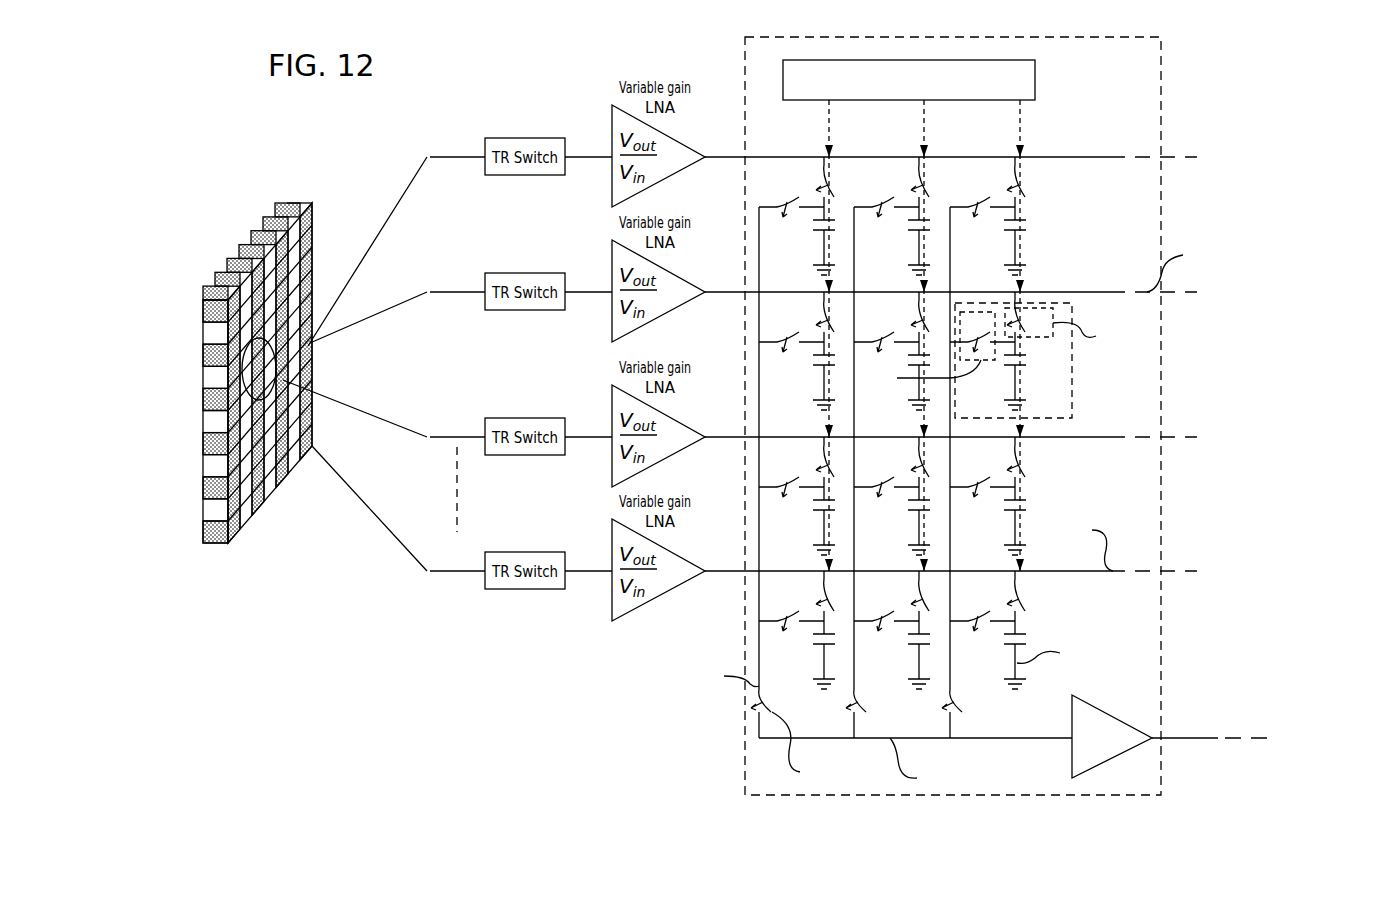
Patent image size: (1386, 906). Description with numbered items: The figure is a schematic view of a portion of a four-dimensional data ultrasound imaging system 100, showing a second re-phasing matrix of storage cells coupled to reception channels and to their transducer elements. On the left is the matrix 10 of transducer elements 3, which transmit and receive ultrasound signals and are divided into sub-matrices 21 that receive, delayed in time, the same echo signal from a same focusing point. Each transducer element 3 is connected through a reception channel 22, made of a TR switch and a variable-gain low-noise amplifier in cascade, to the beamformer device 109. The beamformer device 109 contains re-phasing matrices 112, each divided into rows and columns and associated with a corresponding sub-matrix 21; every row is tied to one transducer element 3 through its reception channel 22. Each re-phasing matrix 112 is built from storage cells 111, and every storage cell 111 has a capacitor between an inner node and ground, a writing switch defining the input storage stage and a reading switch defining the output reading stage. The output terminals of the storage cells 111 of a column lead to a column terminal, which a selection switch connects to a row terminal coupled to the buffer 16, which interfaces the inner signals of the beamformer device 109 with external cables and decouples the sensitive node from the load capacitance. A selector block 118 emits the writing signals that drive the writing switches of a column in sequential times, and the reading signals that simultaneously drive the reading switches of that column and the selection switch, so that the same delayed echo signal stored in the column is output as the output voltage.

The transducer elements 3 is at (203, 357).
The matrix 10 is at (248, 247).
The sub-matrix 21 is at (243, 396).
The reception channel 22 is at (813, 350).
The buffer 16 is at (1072, 768).
The 4D data ultrasound imaging system 100 is at (1278, 106).
The beamformer device 109 is at (1168, 80).
The storage cell 111 is at (1072, 395).
The re-phasing matrix 112 is at (1138, 214).
The selector block 118 is at (1035, 74).